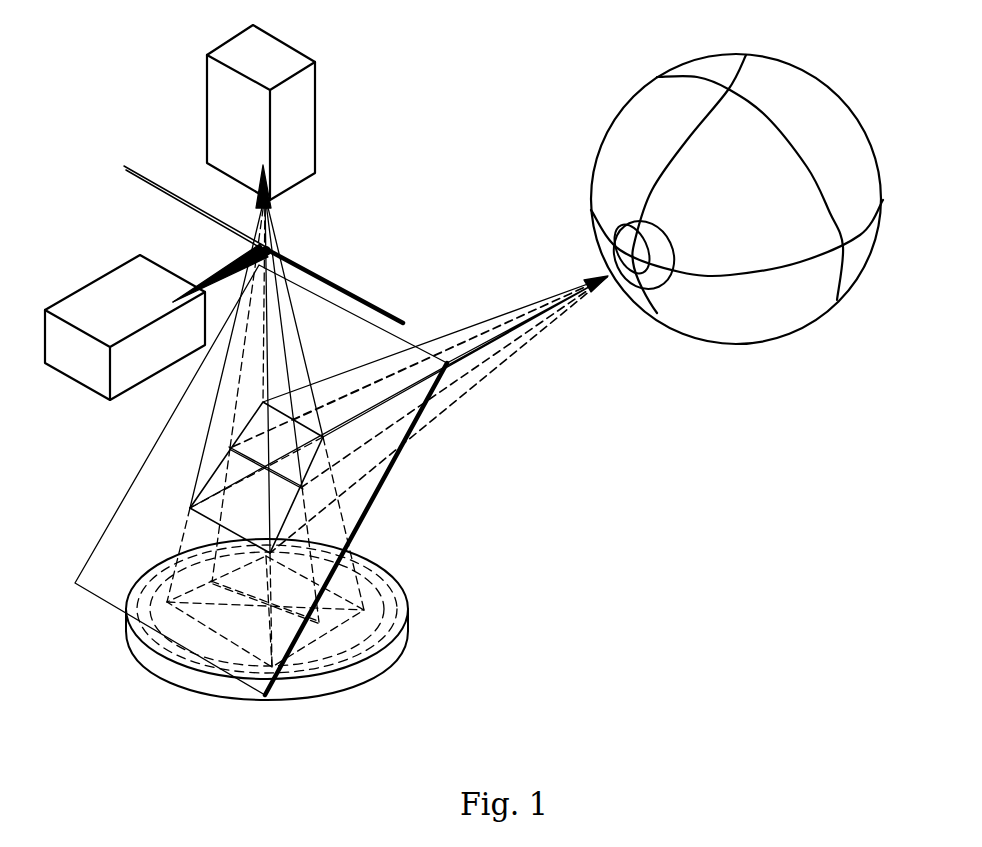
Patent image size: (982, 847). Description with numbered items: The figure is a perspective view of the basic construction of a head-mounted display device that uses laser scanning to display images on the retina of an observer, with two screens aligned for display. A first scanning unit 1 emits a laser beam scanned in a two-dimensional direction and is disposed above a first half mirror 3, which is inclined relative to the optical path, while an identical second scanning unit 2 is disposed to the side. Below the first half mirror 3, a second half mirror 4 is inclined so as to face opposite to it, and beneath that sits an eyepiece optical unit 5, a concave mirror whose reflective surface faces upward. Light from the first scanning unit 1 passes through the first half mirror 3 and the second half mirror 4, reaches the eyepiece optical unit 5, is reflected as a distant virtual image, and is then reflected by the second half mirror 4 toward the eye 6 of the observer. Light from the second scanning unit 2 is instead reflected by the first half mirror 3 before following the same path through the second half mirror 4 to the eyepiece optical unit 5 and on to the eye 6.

The first scanning unit 1 is at (278, 53).
The second scanning unit 2 is at (108, 288).
The first half mirror 3 is at (150, 173).
The second half mirror 4 is at (393, 477).
The eyepiece optical unit 5 is at (393, 642).
The eye of an observer 6 is at (732, 322).